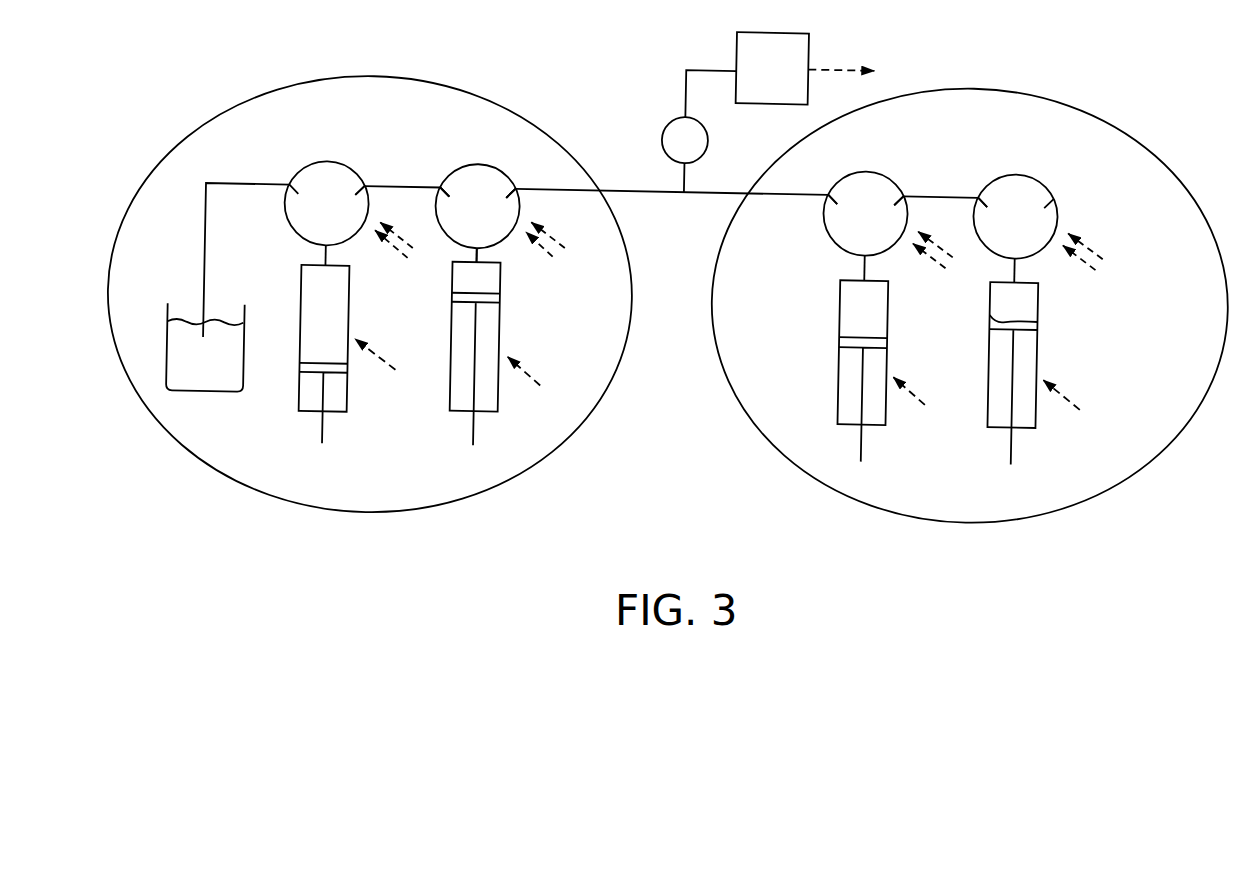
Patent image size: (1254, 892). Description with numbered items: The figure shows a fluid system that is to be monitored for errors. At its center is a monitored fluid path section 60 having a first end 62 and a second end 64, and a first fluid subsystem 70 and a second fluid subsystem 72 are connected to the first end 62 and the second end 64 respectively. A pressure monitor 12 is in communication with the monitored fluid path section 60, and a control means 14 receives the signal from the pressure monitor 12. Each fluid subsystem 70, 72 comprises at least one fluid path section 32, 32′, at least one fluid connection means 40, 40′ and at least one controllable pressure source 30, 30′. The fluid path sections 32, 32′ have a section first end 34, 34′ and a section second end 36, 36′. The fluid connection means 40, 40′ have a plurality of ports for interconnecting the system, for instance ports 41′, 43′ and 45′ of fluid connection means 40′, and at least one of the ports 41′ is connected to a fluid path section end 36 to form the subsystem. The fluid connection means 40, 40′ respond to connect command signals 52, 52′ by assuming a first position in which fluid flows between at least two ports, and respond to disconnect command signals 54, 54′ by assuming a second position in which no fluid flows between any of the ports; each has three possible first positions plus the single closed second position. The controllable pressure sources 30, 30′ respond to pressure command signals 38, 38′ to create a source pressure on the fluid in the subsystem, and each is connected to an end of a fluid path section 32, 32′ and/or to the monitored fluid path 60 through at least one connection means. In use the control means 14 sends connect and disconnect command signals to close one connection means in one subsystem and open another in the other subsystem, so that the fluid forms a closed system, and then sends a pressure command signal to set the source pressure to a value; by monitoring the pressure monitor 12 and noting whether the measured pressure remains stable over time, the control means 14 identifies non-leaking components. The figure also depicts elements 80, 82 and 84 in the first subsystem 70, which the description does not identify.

The pressure monitor 12 is at (707, 131).
The control means 14 is at (770, 93).
The controllable pressure source 30 is at (303, 291).
The controllable pressure source 30′ is at (454, 324).
The fluid path section 32 is at (394, 183).
The fluid path section 32′ is at (930, 181).
The section first end 34 is at (366, 177).
The section first end 34′ is at (905, 177).
The section second end 36 is at (441, 177).
The section second end 36′ is at (983, 177).
The pressure command signal 38 is at (388, 367).
The pressure command signal 38′ is at (543, 384).
The fluid connection means 40 is at (315, 213).
The fluid connection means 40′ is at (466, 213).
The port 41′ is at (436, 198).
The port 43′ is at (520, 196).
The port 45′ is at (483, 245).
The connect command signal 52 is at (411, 255).
The disconnect command signal 54 is at (392, 244).
The connect command signal 52′ is at (552, 261).
The disconnect command signal 54′ is at (565, 243).
The monitored fluid path section 60 is at (668, 183).
The first end 62 is at (518, 183).
The second end 64 is at (815, 183).
The first fluid subsystem 70 is at (242, 514).
The second fluid subsystem 72 is at (840, 519).
The reservoir 80 is at (218, 391).
The fluid 82 is at (196, 370).
The supply line 84 is at (205, 235).